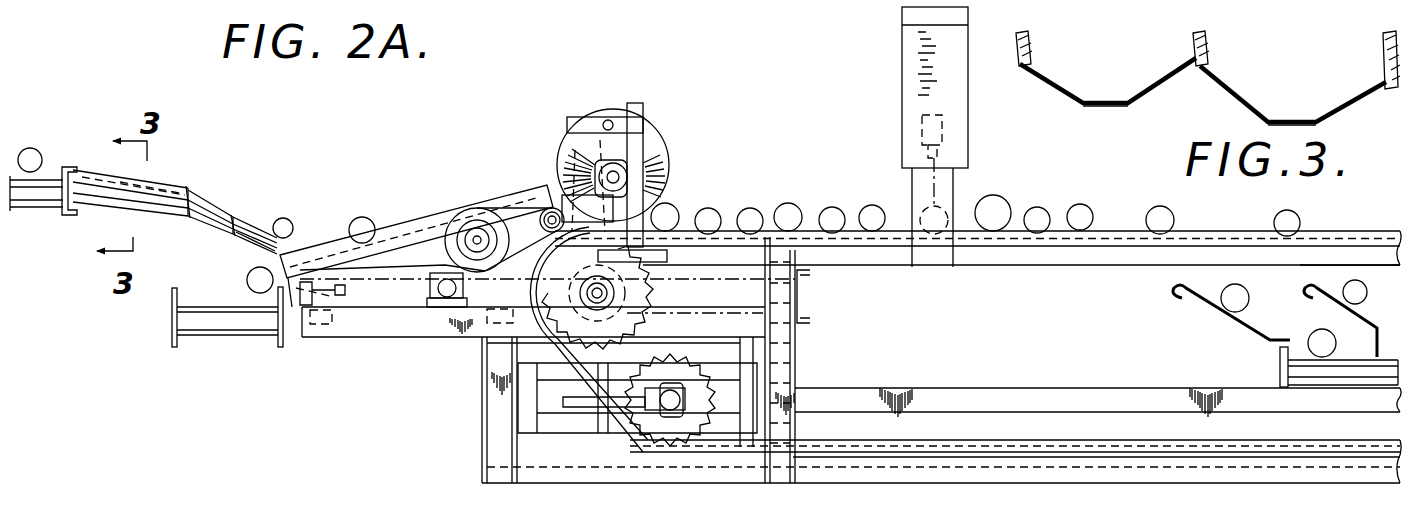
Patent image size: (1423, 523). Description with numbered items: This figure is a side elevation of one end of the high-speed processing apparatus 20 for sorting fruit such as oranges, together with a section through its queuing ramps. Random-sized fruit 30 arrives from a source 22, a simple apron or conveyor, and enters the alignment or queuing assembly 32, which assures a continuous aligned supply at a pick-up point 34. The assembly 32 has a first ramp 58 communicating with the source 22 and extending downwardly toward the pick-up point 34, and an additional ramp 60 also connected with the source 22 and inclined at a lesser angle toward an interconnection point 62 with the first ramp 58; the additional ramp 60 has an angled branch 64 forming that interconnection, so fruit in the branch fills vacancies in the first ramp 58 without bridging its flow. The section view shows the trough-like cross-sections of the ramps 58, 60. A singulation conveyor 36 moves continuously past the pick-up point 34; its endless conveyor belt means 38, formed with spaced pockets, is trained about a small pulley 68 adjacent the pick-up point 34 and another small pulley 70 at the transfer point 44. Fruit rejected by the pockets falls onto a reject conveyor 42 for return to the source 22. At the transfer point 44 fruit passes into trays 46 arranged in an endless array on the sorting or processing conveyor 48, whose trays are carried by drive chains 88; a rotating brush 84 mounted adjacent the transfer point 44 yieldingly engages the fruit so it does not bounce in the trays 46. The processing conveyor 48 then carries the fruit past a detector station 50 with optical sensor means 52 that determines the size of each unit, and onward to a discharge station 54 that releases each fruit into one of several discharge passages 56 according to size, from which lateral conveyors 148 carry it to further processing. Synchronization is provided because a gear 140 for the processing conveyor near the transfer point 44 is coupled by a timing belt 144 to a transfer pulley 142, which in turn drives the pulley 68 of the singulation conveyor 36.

In FIG. 2A, the high-speed processing apparatus 20 is at (811, 133).
In FIG. 2A, the source 22 is at (57, 166).
In FIG. 2A, the fruit 30 is at (36, 141).
In FIG. 2A, the alignment or queuing assembly 32 is at (160, 178).
In FIG. 3, the alignment or queuing assembly 32 is at (1212, 52).
In FIG. 2A, the pick-up point 34 is at (323, 227).
In FIG. 2A, the singulation conveyor 36 is at (451, 188).
In FIG. 2A, the endless conveyor belt means 38 is at (410, 222).
In FIG. 2A, the reject conveyor 42 is at (212, 338).
In FIG. 2A, the transfer point 44 is at (555, 182).
In FIG. 2A, the trays 46 is at (720, 228).
In FIG. 2A, the sorting or processing conveyor 48 is at (1320, 230).
In FIG. 2A, the sensor or detector station 50 is at (900, 37).
In FIG. 2A, the optical sensor means 52 is at (922, 128).
In FIG. 2A, the discharge station 54 is at (1372, 222).
In FIG. 2A, the discharge passages 56 is at (1290, 326).
In FIG. 2A, the first ramp 58 is at (281, 224).
In FIG. 3, the first ramp 58 is at (1290, 118).
In FIG. 2A, the additional ramp 60 is at (139, 176).
In FIG. 3, the additional ramp 60 is at (1093, 100).
In FIG. 2A, the interconnection point 62 is at (243, 222).
In FIG. 2A, the angled branch 64 is at (195, 198).
In FIG. 2A, the small pulley 68 is at (277, 257).
In FIG. 2A, the small pulley 70 is at (546, 213).
In FIG. 2A, the rotating brush 84 is at (659, 153).
In FIG. 2A, the drive chains 88 is at (1018, 441).
In FIG. 2A, the gear 140 is at (652, 293).
In FIG. 2A, the transfer pulley 142 is at (430, 290).
In FIG. 2A, the timing belt 144 is at (472, 312).
In FIG. 2A, the lateral conveyors 148 is at (1300, 368).